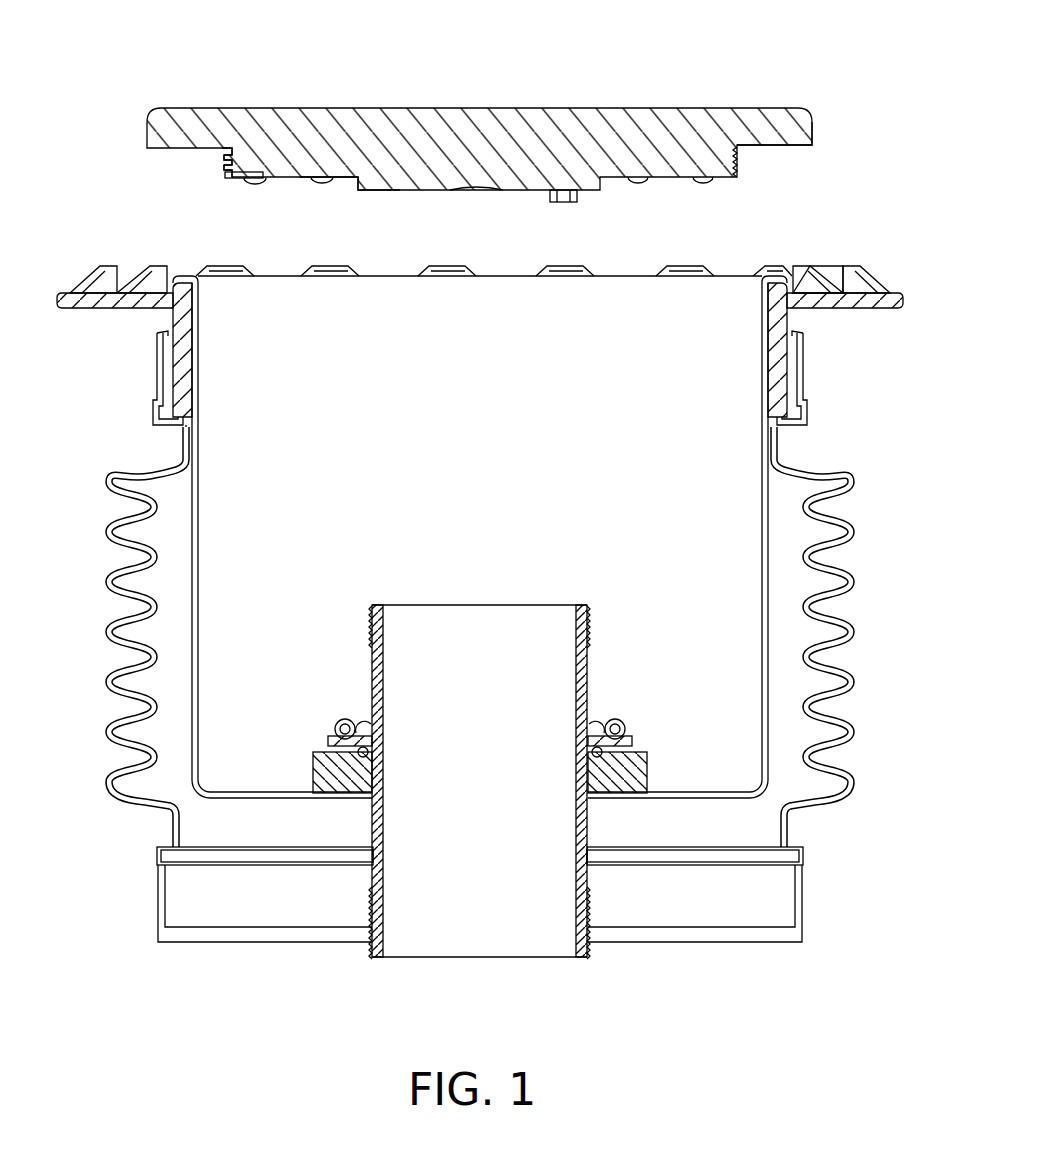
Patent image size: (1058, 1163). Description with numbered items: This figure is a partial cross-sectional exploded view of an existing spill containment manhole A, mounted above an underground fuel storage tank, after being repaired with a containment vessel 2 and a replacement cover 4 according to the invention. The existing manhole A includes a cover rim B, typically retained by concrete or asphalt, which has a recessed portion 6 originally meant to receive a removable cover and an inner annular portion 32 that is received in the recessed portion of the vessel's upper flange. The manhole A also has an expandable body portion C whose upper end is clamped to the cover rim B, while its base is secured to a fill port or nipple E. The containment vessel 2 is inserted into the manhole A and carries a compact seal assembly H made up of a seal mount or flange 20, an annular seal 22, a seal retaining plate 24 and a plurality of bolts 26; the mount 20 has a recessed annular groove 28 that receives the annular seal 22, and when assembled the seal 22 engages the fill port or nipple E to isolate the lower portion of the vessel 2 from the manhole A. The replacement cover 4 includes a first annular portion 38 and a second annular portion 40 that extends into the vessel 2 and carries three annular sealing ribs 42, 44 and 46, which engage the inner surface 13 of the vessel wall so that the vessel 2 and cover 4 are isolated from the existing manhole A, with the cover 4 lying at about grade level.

The containment vessel 2 is at (846, 242).
The cover 4 is at (764, 82).
The recessed portion 6 is at (808, 261).
The inner surface 13 is at (200, 376).
The seal mount or flange 20 is at (312, 752).
The annular seal 22 is at (360, 758).
The seal retaining plate 24 is at (327, 737).
The bolts 26 is at (345, 720).
The recessed annular groove 28 is at (368, 752).
The inner annular portion 32 is at (776, 276).
The first annular portion 38 is at (808, 128).
The second annular portion 40 is at (345, 181).
The annular sealing rib 42 is at (222, 153).
The annular sealing rib 44 is at (223, 161).
The annular sealing rib 46 is at (224, 170).
The existing spill containment manhole A is at (98, 441).
The cover rim B is at (56, 272).
The expandable body portion C is at (92, 615).
The fill port or nipple E is at (606, 596).
The compact seal assembly H is at (282, 660).